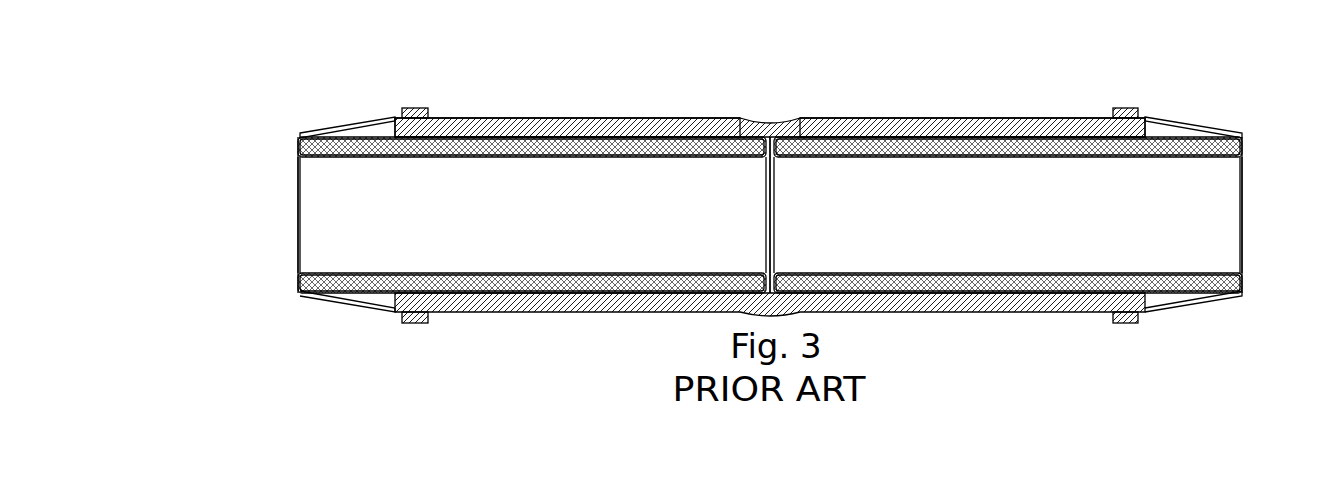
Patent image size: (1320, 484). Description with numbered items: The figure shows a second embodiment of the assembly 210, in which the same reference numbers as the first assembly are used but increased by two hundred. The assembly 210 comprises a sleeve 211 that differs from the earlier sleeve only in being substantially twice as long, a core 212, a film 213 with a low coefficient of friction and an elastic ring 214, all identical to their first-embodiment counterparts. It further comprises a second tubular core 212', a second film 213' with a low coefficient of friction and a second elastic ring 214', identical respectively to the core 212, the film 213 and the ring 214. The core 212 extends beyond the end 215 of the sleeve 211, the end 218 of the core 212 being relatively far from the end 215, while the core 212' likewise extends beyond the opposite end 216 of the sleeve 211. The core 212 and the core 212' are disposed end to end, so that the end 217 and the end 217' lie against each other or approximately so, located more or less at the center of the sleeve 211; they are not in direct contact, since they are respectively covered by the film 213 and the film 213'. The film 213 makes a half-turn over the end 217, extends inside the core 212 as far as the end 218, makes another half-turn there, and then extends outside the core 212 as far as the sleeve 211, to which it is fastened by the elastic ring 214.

The assembly 210 is at (277, 96).
The sleeve 211 is at (970, 130).
The core 212 is at (532, 190).
The second tubular core 212' is at (1008, 190).
The film 213 is at (567, 109).
The second film 213' is at (972, 109).
The elastic ring 214 is at (399, 193).
The second elastic ring 214' is at (1110, 192).
The end of the sleeve 215 is at (390, 128).
The end of the sleeve 216 is at (1150, 128).
The end of the core 217 is at (726, 192).
The end of the core 217' is at (815, 192).
The end of the core 218 is at (297, 146).